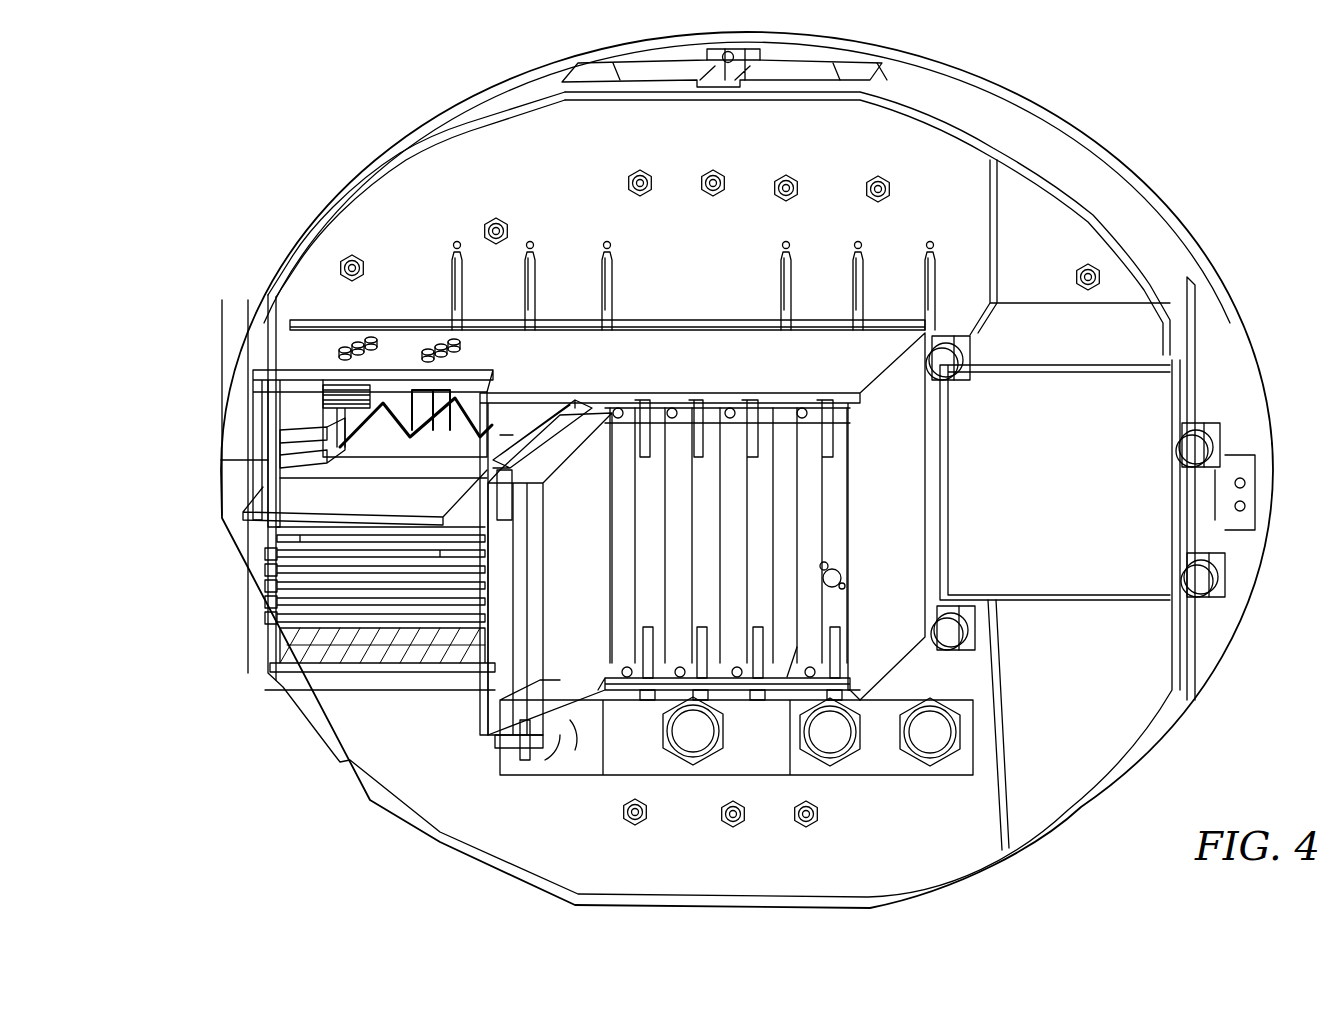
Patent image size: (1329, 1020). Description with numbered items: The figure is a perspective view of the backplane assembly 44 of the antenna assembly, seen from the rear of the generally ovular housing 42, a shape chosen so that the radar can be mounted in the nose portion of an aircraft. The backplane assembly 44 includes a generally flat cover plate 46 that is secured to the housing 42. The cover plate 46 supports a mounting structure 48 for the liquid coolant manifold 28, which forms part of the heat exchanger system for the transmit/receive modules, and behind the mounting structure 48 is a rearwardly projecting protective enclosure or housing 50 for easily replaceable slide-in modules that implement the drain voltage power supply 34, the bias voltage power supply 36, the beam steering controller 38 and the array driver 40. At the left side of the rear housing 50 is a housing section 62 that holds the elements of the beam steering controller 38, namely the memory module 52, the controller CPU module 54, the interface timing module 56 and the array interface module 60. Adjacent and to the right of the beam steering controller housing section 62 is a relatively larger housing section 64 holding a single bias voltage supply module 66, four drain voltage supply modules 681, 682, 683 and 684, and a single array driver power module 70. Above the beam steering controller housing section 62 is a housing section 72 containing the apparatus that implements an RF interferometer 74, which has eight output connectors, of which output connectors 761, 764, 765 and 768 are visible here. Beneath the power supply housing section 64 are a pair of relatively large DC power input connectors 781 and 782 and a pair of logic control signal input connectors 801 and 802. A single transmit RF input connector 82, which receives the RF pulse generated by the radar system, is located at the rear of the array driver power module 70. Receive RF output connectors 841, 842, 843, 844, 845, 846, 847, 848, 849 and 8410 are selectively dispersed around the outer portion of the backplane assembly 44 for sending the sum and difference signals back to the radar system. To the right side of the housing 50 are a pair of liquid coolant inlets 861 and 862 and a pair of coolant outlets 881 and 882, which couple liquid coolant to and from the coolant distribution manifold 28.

The liquid coolant manifold 28 is at (688, 318).
The drain voltage power supply 34 is at (832, 390).
The bias voltage power supply 36 is at (525, 392).
The beam steering controller 38 is at (323, 629).
The array driver 40 is at (842, 392).
The housing 42 is at (1027, 112).
The backplane assembly 44 is at (714, 254).
The cover plate 46 is at (1073, 784).
The mounting structure 48 is at (628, 320).
The protective enclosure or housing 50 is at (905, 438).
The memory module 52 is at (384, 520).
The controller CPU module 54 is at (318, 540).
The interface timing module 56 is at (285, 568).
The array interface module 60 is at (290, 605).
The beam steering controller housing section 62 is at (356, 683).
The power supply housing section 64 is at (800, 345).
The bias voltage supply module 66 is at (510, 430).
The drain voltage supply module 681 is at (532, 562).
The drain voltage supply module 682 is at (645, 496).
The drain voltage supply module 683 is at (680, 578).
The drain voltage supply module 684 is at (768, 520).
The array driver power module 70 is at (835, 493).
The RF interferometer housing section 72 is at (290, 407).
The RF interferometer 74 is at (378, 462).
The output connector 761 is at (348, 345).
The output connector 764 is at (370, 338).
The output connector 765 is at (445, 345).
The output connector 768 is at (448, 352).
The DC power input connector 781 is at (570, 768).
The DC power input connector 782 is at (708, 764).
The logic control signal input connector 801 is at (835, 768).
The logic control signal input connector 802 is at (933, 768).
The transmit RF input connector 82 is at (840, 588).
The receive RF output connector 841 is at (352, 268).
The receive RF output connector 842 is at (490, 218).
The receive RF output connector 843 is at (643, 172).
The receive RF output connector 844 is at (715, 172).
The receive RF output connector 845 is at (788, 176).
The receive RF output connector 846 is at (881, 176).
The receive RF output connector 847 is at (1078, 276).
The receive RF output connector 848 is at (636, 826).
The receive RF output connector 849 is at (735, 828).
The receive RF output connector 8410 is at (808, 828).
The liquid coolant inlet 861 is at (950, 372).
The liquid coolant inlet 862 is at (1185, 460).
The coolant outlet 881 is at (958, 628).
The coolant outlet 882 is at (1190, 572).